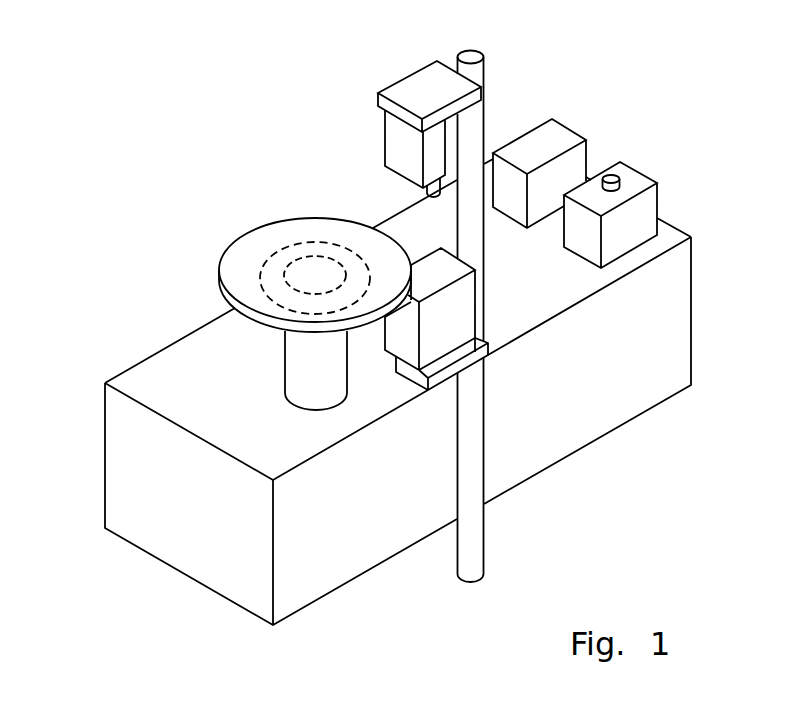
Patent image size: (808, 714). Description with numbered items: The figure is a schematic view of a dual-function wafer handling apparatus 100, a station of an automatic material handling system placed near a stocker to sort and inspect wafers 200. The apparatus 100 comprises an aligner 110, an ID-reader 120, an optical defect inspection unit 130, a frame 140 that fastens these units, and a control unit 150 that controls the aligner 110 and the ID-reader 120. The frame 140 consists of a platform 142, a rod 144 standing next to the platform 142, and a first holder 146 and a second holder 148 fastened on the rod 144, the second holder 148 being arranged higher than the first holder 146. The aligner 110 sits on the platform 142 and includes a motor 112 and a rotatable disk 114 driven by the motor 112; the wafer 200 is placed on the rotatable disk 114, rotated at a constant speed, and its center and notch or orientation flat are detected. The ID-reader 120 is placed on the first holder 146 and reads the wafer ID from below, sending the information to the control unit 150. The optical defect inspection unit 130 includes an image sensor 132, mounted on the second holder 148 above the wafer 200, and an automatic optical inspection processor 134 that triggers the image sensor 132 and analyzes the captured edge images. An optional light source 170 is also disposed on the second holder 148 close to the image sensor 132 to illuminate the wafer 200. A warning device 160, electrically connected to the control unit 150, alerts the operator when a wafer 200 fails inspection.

The dual-function wafer handling apparatus 100 is at (137, 103).
The aligner 110 is at (102, 259).
The motor 112 is at (297, 362).
The rotatable disk 114 is at (263, 295).
The ID-reader 120 is at (408, 345).
The optical defect inspection unit 130 is at (598, 21).
The image sensor 132 is at (483, 118).
The automatic optical inspection processor 134 is at (553, 127).
The frame 140 is at (700, 452).
The platform 142 is at (548, 432).
The rod 144 is at (469, 542).
The first holder 146 is at (471, 357).
The second holder 148 is at (420, 83).
The control unit 150 is at (638, 178).
The warning device 160 is at (613, 178).
The light source 170 is at (438, 195).
The wafer 200 is at (248, 258).